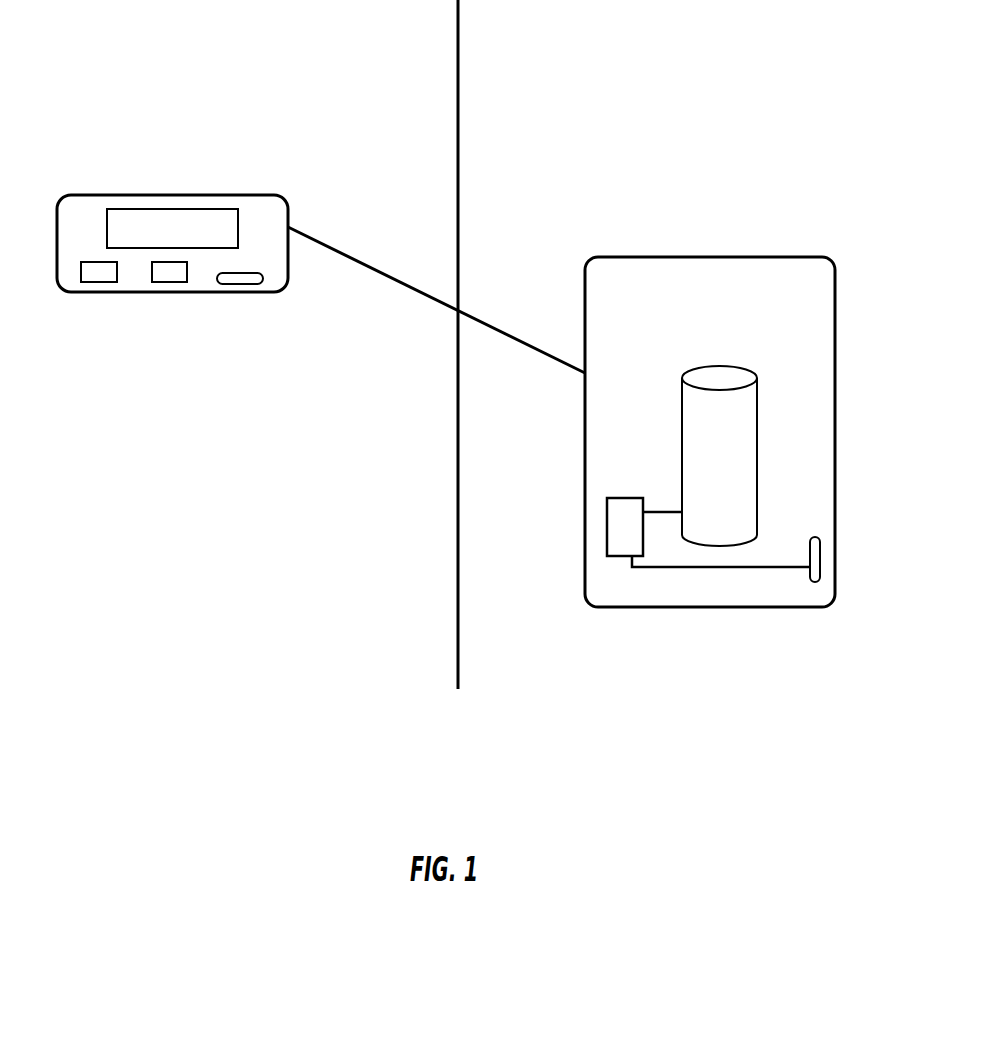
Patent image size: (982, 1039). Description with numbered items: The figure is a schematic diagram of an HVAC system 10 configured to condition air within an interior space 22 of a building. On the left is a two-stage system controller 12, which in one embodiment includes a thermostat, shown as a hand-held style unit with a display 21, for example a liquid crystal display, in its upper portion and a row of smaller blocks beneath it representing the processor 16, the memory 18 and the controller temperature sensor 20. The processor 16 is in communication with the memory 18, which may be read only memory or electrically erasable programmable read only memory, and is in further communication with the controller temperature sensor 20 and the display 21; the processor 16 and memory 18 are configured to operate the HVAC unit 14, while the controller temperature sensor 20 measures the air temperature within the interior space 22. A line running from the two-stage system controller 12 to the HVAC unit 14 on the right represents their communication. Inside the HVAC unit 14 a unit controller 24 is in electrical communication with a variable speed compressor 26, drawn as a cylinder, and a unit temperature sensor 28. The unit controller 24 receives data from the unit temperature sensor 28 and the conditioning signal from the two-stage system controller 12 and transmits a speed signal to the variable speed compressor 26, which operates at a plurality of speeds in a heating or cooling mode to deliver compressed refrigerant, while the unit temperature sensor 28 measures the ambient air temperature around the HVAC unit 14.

The HVAC system 10 is at (86, 89).
The two-stage system controller 12 is at (286, 203).
The HVAC unit 14 is at (703, 255).
The processor 16 is at (97, 282).
The memory 18 is at (172, 283).
The controller temperature sensor 20 is at (247, 284).
The display 21 is at (141, 222).
The interior space 22 is at (178, 412).
The unit controller 24 is at (617, 498).
The variable speed compressor 26 is at (740, 366).
The unit temperature sensor 28 is at (813, 537).